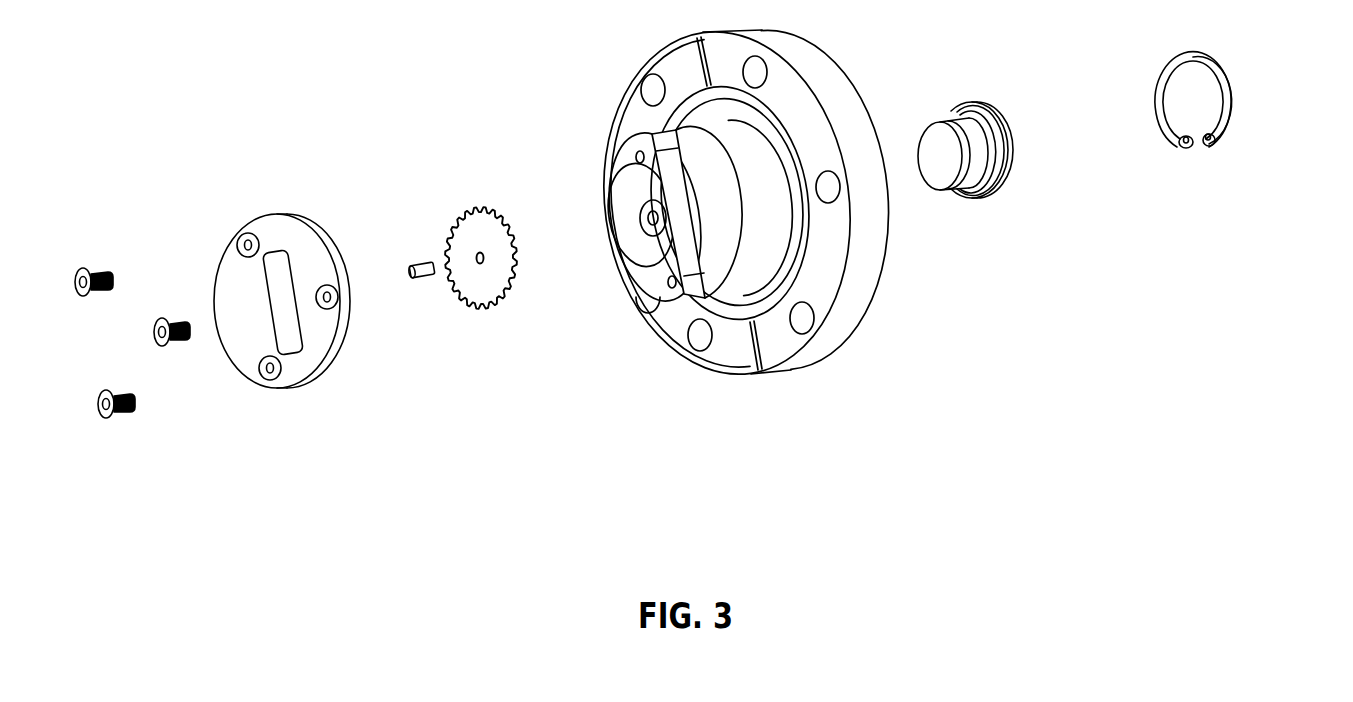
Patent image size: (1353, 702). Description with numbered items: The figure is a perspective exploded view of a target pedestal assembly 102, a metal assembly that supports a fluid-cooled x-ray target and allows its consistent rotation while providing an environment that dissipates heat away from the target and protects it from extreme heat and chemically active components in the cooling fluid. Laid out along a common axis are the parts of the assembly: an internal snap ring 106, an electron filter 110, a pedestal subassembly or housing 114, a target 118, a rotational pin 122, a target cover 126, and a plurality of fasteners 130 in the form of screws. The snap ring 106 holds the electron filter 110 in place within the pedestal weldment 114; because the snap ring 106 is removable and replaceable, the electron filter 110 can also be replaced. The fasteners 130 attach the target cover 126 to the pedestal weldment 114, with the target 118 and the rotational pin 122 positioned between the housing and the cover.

The target pedestal assembly 102 is at (1052, 535).
The internal snap ring 106 is at (1218, 140).
The electron filter 110 is at (995, 188).
The pedestal subassembly or housing 114 is at (849, 330).
The target 118 is at (508, 283).
The rotational pin 122 is at (415, 278).
The target cover 126 is at (327, 370).
The fasteners 130 is at (113, 458).